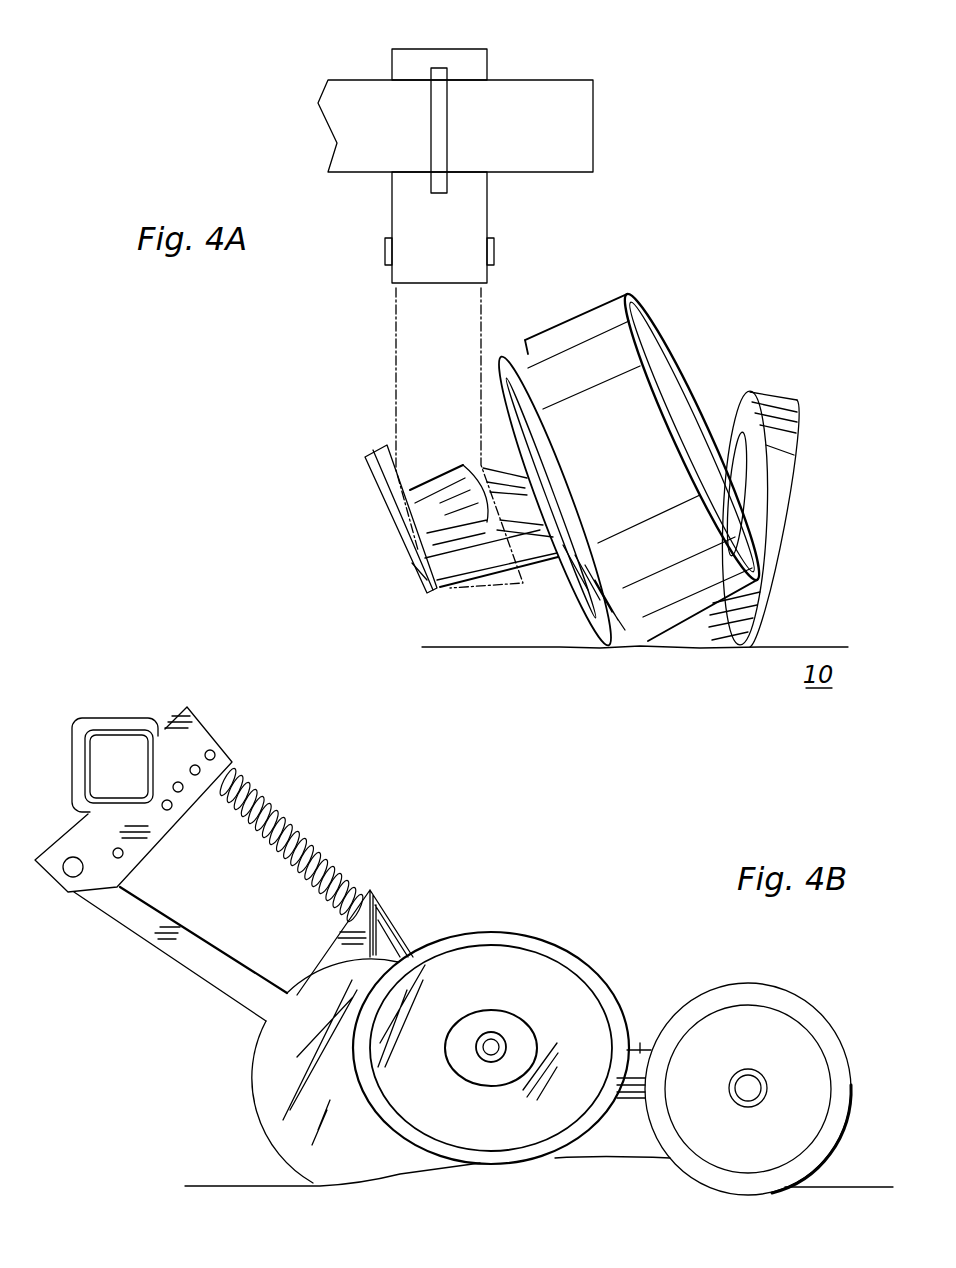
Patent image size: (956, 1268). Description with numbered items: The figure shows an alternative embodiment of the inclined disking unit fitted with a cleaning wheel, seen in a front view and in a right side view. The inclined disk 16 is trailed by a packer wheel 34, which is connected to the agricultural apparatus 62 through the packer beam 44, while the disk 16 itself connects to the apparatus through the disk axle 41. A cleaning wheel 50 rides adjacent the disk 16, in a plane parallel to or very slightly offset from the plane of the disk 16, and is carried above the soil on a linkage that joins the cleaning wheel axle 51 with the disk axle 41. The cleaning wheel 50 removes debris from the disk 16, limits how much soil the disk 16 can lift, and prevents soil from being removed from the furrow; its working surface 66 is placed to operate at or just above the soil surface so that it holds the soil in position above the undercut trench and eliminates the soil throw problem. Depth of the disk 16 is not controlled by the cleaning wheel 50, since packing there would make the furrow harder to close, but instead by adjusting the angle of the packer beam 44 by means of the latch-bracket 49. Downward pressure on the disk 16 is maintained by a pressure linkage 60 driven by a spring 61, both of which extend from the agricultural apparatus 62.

In FIG. 4A, the inclined disk 16 is at (506, 353).
In FIG. 4B, the inclined disk 16 is at (238, 1103).
In FIG. 4A, the packer wheel 34 is at (778, 393).
In FIG. 4B, the packer wheel 34 is at (803, 1005).
In FIG. 4A, the disk axle 41 is at (543, 563).
In FIG. 4A, the packer beam 44 is at (487, 462).
In FIG. 4B, the packer beam 44 is at (640, 1048).
In FIG. 4A, the latch-bracket 49 is at (363, 480).
In FIG. 4A, the cleaning wheel 50 is at (651, 313).
In FIG. 4B, the cleaning wheel 50 is at (527, 933).
In FIG. 4B, the cleaning wheel axle 51 is at (483, 1055).
In FIG. 4B, the pressure linkage 60 is at (173, 960).
In FIG. 4B, the spring 61 is at (313, 840).
In FIG. 4A, the agricultural apparatus 62 is at (503, 81).
In FIG. 4B, the agricultural apparatus 62 is at (178, 696).
In FIG. 4A, the working surface 66 is at (622, 452).
In FIG. 4B, the working surface 66 is at (573, 946).